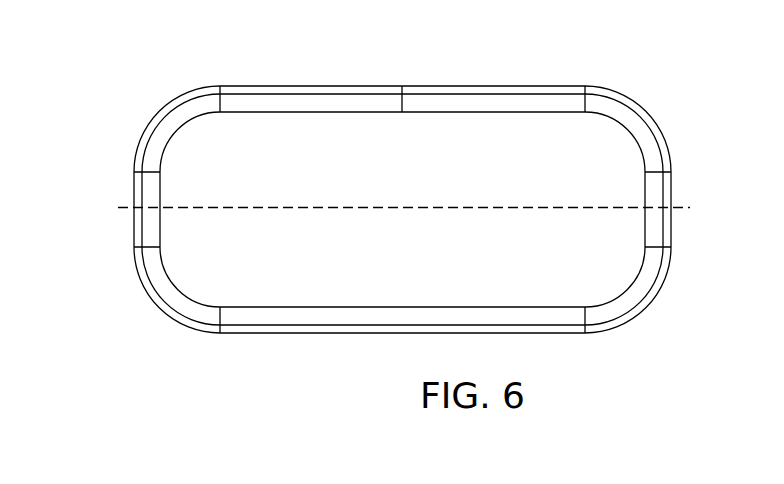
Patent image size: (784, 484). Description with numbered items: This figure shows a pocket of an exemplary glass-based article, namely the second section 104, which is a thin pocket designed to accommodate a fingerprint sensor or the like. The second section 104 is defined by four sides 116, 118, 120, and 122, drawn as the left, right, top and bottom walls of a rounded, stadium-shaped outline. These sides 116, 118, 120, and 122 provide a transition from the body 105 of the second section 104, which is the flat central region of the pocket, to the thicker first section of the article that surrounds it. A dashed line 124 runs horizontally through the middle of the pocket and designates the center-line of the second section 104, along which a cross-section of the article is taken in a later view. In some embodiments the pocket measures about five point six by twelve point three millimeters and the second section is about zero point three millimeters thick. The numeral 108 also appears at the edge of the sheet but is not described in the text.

The second section 104 is at (293, 47).
The body 105 is at (397, 168).
The display 108 is at (0, 432).
The side 116 is at (126, 227).
The side 118 is at (679, 237).
The side 120 is at (506, 78).
The side 122 is at (290, 341).
The line 124 is at (655, 207).